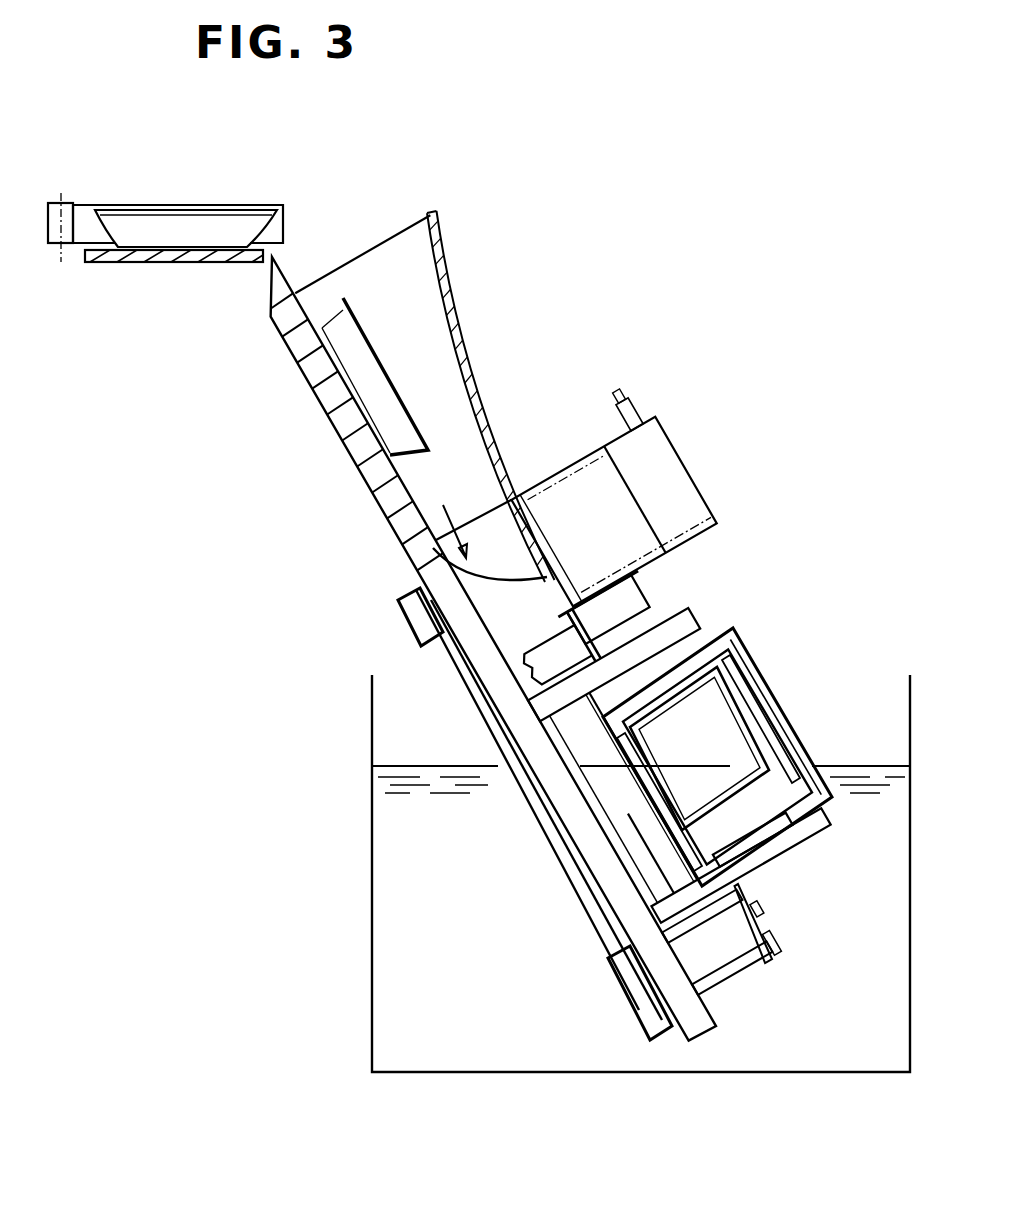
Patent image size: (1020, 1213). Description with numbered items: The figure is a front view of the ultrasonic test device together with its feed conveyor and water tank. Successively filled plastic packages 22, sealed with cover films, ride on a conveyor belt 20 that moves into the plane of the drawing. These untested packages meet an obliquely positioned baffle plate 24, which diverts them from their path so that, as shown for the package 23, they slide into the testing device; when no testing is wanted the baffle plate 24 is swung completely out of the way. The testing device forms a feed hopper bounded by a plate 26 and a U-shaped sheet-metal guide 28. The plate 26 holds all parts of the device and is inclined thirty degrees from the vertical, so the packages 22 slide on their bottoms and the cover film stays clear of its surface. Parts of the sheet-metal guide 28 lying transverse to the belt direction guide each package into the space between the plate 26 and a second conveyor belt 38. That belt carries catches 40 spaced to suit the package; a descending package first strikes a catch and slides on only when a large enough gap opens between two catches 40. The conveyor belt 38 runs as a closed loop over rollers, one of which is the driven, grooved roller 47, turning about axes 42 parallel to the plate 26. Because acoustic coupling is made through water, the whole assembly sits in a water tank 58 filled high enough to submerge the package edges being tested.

The conveyor belt 20 is at (175, 263).
The plastic packages 22 is at (205, 225).
The package 23 is at (352, 372).
The baffle plate 24 is at (83, 207).
The plate 26 is at (378, 507).
The U-shaped sheet-metal guide 28 is at (460, 407).
The conveyor belt 38 is at (740, 732).
The catches 40 is at (700, 815).
The axes 42 is at (690, 633).
The roller 47 is at (782, 991).
The water tank 58 is at (378, 802).